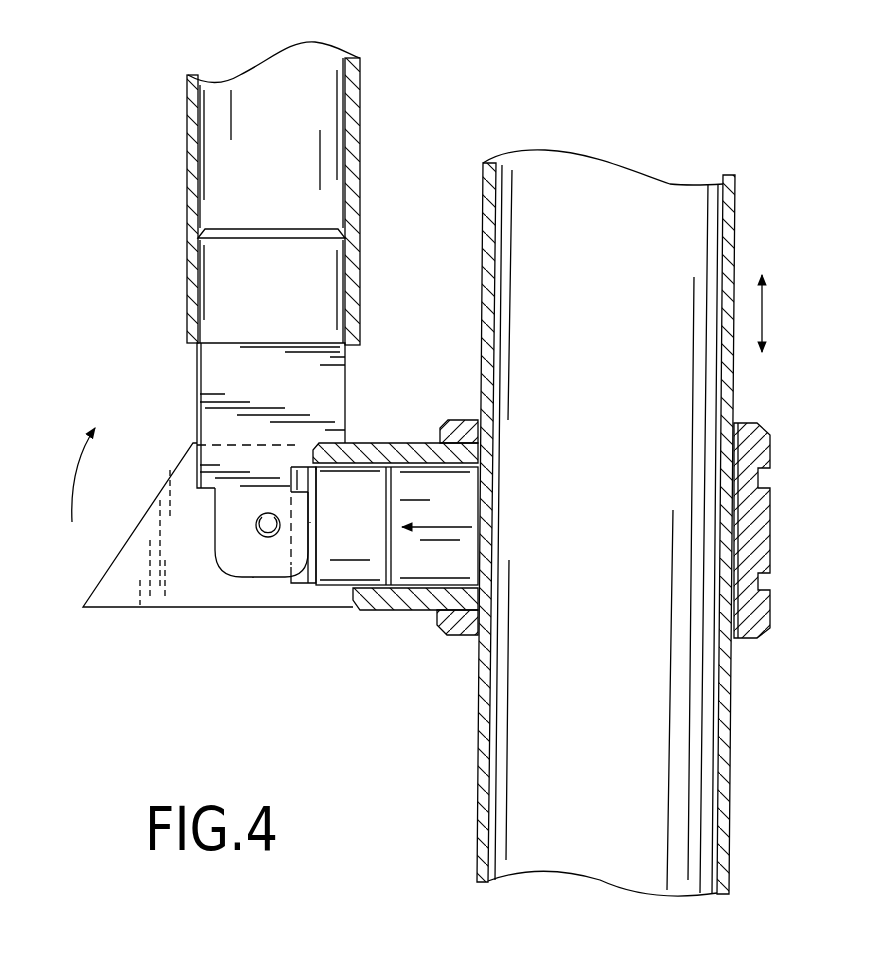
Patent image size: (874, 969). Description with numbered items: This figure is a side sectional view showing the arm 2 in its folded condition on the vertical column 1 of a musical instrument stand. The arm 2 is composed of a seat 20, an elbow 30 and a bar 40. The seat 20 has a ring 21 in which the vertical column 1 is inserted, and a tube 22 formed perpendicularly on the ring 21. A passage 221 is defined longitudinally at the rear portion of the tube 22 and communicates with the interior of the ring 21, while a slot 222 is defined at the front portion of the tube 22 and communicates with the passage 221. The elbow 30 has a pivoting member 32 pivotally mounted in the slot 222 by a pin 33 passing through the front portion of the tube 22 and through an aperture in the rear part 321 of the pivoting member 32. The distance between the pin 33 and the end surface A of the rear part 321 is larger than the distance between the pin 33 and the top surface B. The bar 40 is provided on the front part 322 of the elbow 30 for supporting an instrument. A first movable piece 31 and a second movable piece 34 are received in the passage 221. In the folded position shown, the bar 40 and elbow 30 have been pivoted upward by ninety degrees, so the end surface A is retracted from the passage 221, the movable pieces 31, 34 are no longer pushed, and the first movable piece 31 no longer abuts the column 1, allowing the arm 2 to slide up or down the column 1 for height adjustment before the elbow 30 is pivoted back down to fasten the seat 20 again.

The vertical column 1 is at (741, 231).
The arm 2 is at (575, 507).
The seat 20 is at (797, 530).
The ring 21 is at (760, 535).
The tube 22 is at (388, 517).
The passage 221 is at (437, 472).
The slot 222 is at (309, 452).
The elbow 30 is at (168, 614).
The first movable piece 31 is at (420, 577).
The pivoting member 32 is at (224, 504).
The rear part 321 is at (236, 560).
The front part 322 is at (332, 293).
The pin 33 is at (257, 524).
The second movable piece 34 is at (342, 576).
The bar 40 is at (312, 193).
The end surface A is at (253, 578).
The top surface B is at (311, 522).